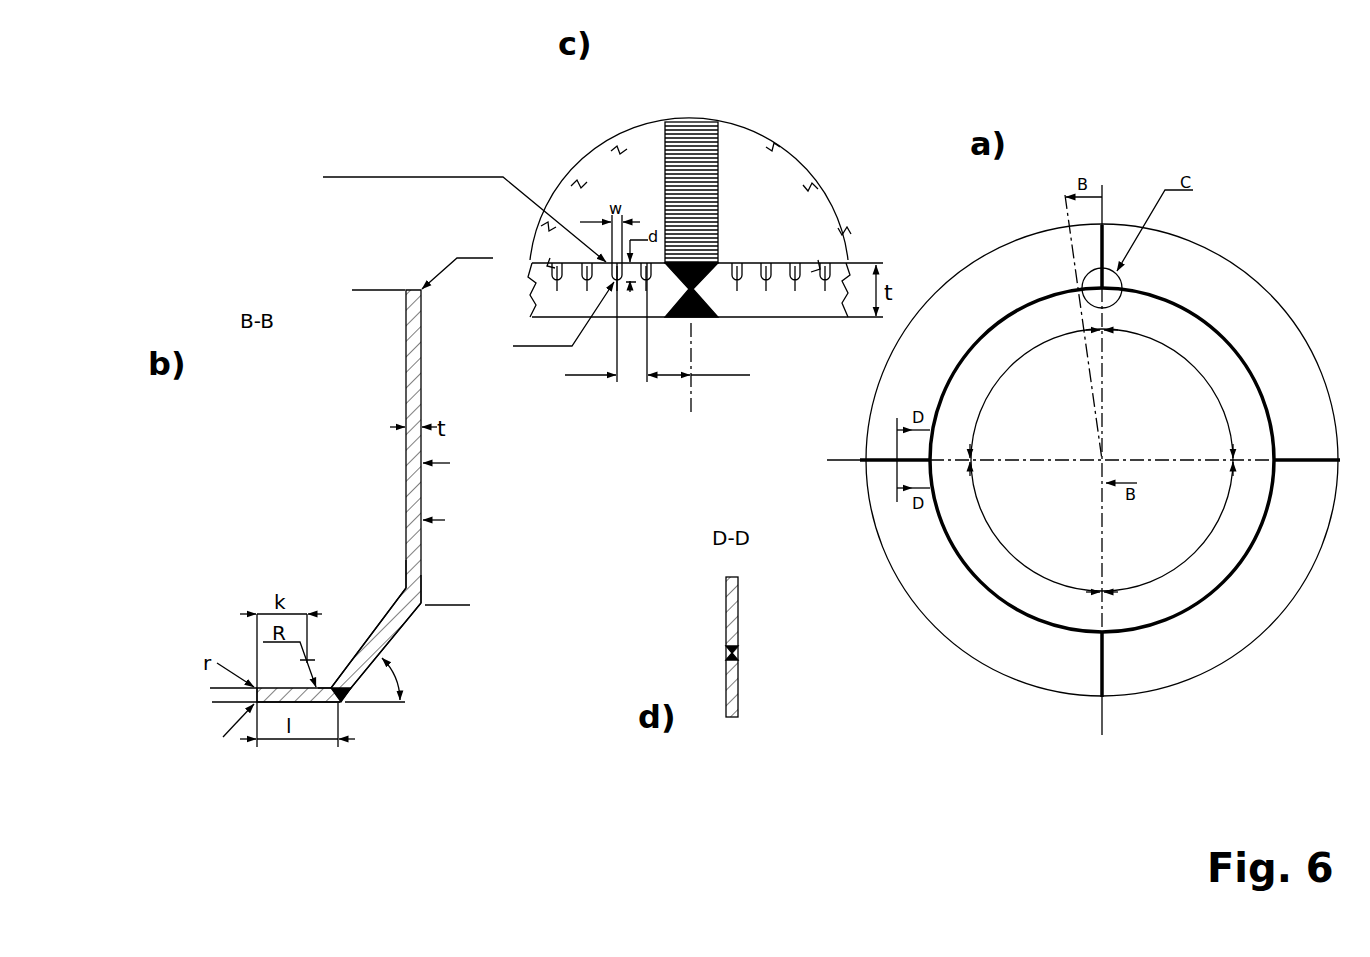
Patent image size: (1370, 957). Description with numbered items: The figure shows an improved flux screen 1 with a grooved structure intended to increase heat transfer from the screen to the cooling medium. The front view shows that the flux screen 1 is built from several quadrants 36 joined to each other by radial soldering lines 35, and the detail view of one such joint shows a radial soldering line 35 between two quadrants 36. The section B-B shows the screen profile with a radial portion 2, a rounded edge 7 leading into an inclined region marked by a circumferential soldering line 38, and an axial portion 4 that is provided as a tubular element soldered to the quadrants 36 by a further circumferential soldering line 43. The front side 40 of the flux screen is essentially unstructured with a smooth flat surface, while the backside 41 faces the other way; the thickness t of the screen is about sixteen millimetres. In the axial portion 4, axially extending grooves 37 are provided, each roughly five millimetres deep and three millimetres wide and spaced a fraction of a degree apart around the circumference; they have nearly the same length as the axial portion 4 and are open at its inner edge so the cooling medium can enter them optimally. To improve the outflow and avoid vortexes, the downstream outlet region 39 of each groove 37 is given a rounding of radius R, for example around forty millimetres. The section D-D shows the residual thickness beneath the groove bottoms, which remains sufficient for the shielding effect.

The flux screen 1 is at (1243, 312).
The radial portion of flux screen 2 is at (419, 359).
The axial portion of flux screen 4 is at (324, 704).
The rounded edges 7 is at (410, 595).
The radial soldering line 35 is at (703, 168).
The quadrants of flux screen 36 is at (610, 150).
The groove 37 is at (765, 282).
The circumferential soldering line 38 is at (402, 627).
The downstream outlet region of groove 39 is at (314, 687).
The frontside of flux screen 40 is at (802, 320).
The backside of flux screen 41 is at (810, 263).
The circumferential soldering line 43 is at (343, 705).